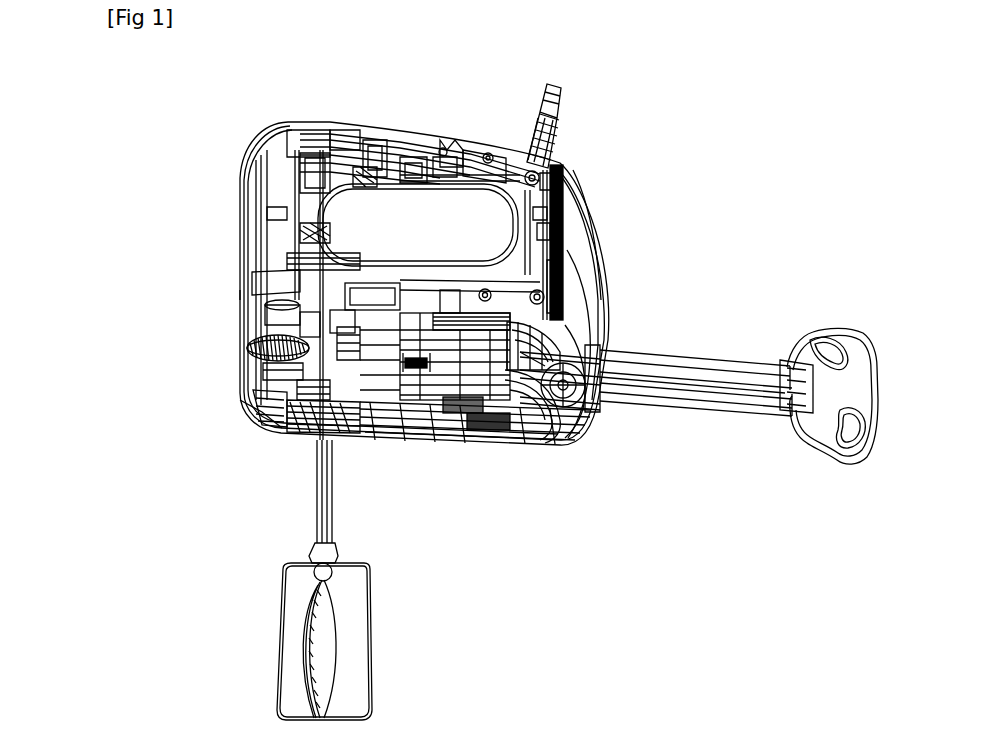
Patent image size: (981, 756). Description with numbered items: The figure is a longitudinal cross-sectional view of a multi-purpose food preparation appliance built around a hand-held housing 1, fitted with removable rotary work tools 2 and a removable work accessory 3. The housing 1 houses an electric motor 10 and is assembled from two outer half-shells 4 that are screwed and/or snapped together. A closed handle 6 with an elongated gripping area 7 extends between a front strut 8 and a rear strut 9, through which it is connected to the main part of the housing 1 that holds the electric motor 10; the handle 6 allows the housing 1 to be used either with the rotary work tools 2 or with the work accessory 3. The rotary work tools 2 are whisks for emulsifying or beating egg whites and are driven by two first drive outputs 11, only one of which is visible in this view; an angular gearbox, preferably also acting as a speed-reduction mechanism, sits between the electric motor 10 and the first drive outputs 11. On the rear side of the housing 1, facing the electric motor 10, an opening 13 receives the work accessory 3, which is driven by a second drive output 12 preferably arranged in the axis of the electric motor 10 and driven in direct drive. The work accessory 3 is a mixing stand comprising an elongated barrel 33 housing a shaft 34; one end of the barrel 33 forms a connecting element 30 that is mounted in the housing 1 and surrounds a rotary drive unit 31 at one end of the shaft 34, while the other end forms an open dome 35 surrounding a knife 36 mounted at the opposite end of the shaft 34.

The hand-held housing 1 is at (195, 393).
The removable rotary work tools 2 is at (255, 683).
The removable work accessory 3 is at (690, 442).
The outer half-shell 4 is at (612, 322).
The handle 6 is at (433, 138).
The elongated gripping area 7 is at (335, 148).
The front strut 8 is at (238, 197).
The rear strut 9 is at (577, 228).
The electric motor 10 is at (446, 428).
The first drive outputs 11 is at (330, 410).
The second drive output 12 is at (525, 400).
The opening 13 is at (568, 395).
The connecting element 30 is at (570, 320).
The rotary drive unit 31 is at (585, 318).
The elongated barrel 33 is at (705, 357).
The shaft 34 is at (720, 392).
The open dome 35 is at (843, 325).
The knife 36 is at (853, 362).